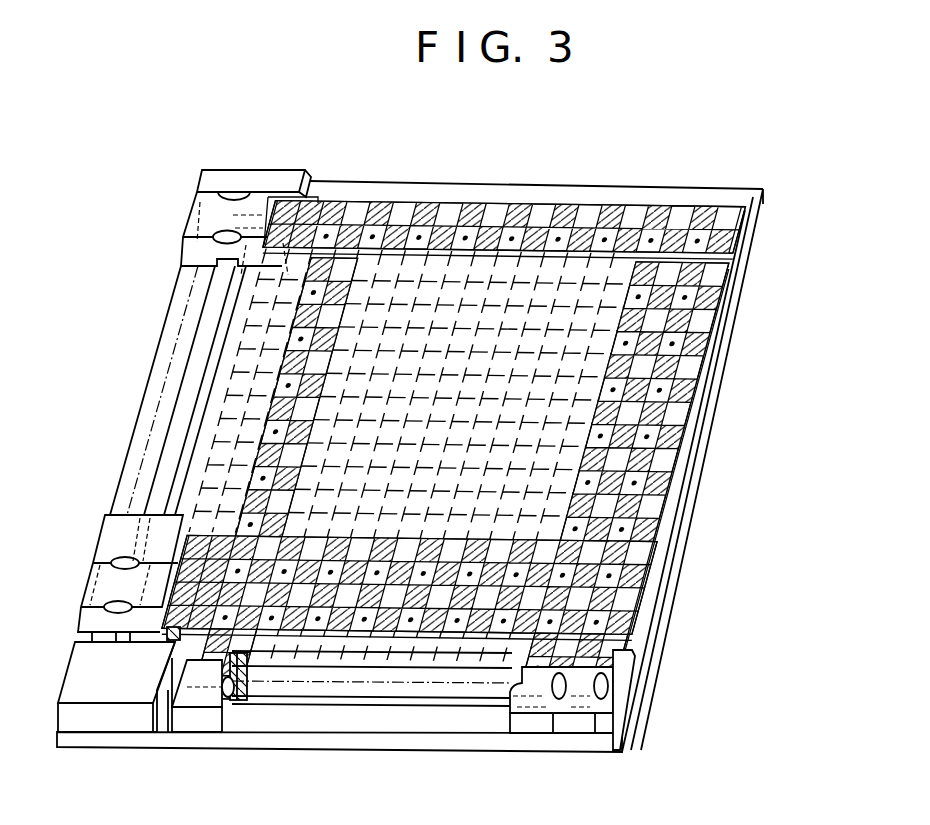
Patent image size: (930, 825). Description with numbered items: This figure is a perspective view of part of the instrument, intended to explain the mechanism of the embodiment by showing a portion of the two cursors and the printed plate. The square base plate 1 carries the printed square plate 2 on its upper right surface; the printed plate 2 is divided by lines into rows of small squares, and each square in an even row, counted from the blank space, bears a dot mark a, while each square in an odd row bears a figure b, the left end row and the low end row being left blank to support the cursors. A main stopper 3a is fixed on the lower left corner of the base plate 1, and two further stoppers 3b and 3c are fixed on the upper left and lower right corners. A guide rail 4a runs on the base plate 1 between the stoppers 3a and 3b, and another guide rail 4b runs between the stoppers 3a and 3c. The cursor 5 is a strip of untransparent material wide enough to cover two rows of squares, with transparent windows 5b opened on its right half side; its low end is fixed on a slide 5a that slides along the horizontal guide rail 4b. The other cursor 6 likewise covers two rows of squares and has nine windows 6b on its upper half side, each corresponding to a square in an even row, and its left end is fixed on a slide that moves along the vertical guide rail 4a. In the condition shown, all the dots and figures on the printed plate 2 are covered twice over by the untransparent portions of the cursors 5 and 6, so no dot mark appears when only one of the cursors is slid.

The base plate 1 is at (397, 743).
The printed square plate 2 is at (548, 272).
The main stopper 3a is at (113, 693).
The stopper 3b is at (253, 187).
The stopper 3c is at (614, 688).
The guide rail 4a is at (197, 378).
The guide rail 4b is at (342, 697).
The cursor 5 is at (250, 663).
The slide 5a is at (190, 720).
The transparent windows 5b is at (683, 385).
The cursor 6 is at (394, 467).
The windows 6b is at (517, 213).
The dot mark a is at (648, 242).
The figure b is at (685, 210).